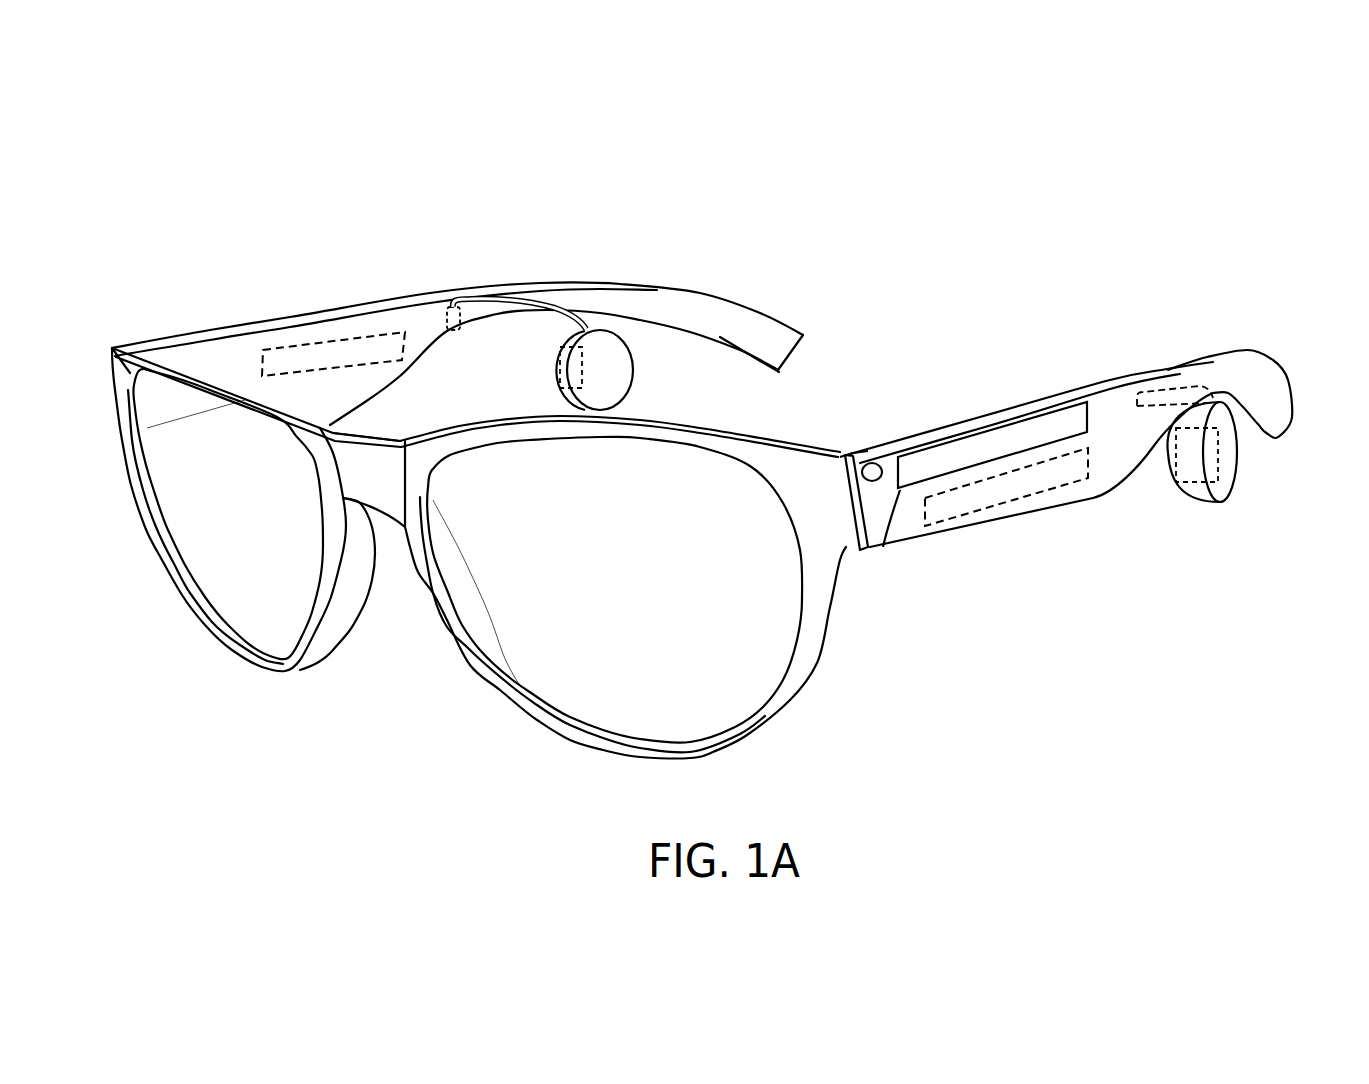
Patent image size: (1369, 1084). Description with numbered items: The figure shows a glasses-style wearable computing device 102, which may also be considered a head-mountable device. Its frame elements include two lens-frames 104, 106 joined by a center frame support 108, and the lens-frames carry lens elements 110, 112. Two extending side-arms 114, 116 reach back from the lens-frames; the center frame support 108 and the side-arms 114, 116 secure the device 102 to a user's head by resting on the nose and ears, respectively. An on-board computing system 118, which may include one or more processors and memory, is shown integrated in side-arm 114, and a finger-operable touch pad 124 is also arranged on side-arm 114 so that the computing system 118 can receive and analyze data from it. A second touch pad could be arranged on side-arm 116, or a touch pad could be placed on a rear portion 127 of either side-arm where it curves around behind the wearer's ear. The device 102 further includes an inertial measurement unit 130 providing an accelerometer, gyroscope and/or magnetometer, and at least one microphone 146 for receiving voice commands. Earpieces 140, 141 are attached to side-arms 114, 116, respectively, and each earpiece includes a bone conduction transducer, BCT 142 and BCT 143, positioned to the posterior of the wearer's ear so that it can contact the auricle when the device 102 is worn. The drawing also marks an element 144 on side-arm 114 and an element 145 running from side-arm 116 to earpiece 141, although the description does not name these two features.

The wearable computing device 102 is at (1094, 167).
The lens-frame 104 is at (282, 673).
The lens-frame 106 is at (623, 758).
The center frame support 108 is at (377, 457).
The lens element 110 is at (218, 603).
The lens element 112 is at (552, 695).
The extending side-arm 114 is at (1078, 502).
The extending side-arm 116 is at (364, 320).
The on-board computing system 118 is at (1047, 467).
The finger-operable touch pad 124 is at (890, 545).
The rear portion 127 is at (808, 323).
The inertial measurement unit 130 is at (270, 349).
The earpiece 140 is at (1218, 490).
The earpiece 141 is at (633, 375).
The BCT 142 is at (1207, 463).
The BCT 143 is at (557, 374).
The connector region 144 is at (1163, 380).
The cable 145 is at (540, 300).
The microphone 146 is at (872, 462).